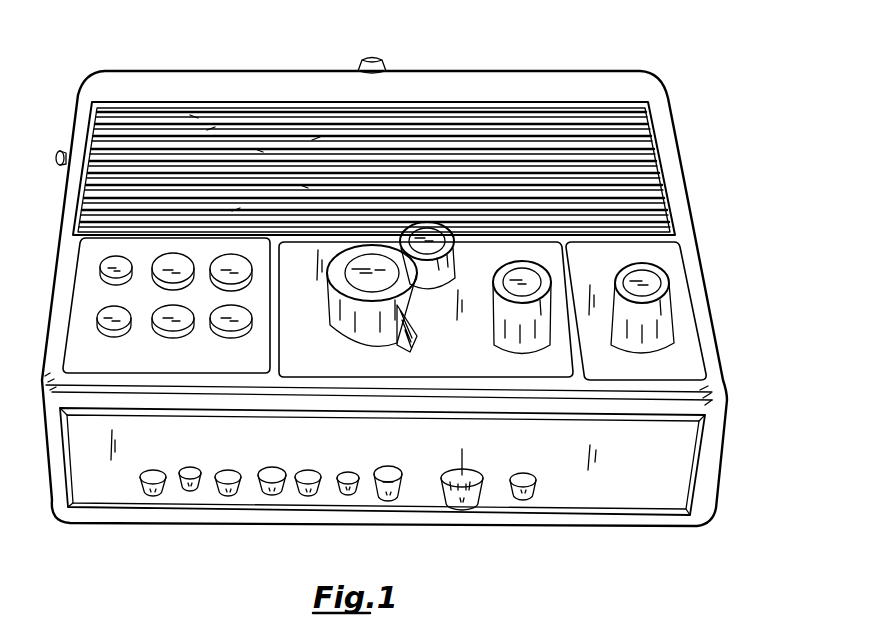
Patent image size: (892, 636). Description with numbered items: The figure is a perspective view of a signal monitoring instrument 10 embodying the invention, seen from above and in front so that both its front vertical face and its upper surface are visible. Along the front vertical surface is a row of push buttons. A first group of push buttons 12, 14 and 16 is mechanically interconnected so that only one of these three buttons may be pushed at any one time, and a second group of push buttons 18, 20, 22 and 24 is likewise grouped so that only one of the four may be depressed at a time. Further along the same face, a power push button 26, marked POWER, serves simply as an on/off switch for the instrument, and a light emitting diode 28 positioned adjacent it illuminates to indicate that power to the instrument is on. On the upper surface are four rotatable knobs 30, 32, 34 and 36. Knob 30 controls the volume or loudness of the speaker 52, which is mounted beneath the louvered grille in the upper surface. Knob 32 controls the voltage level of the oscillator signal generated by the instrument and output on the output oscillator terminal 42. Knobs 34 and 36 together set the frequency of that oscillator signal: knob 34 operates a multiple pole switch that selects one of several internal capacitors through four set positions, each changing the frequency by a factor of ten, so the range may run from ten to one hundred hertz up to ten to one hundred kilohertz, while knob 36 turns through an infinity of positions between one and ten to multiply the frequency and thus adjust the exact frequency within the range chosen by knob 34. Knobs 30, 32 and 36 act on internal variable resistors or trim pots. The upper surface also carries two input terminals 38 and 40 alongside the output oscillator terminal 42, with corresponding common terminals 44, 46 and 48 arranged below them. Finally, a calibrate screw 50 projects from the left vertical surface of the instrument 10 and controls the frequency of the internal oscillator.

The signal monitoring instrument 10 is at (496, 44).
The push button 12 is at (150, 497).
The push button 14 is at (190, 492).
The push button 16 is at (229, 497).
The push button 18 is at (272, 497).
The push button 20 is at (308, 497).
The push button 22 is at (347, 495).
The push button 24 is at (390, 501).
The power push button 26 is at (462, 510).
The light emitting diode 28 is at (523, 503).
The rotatable knob 30 is at (650, 273).
The rotatable knob 32 is at (541, 270).
The rotatable knob 34 is at (446, 243).
The rotatable knob 36 is at (360, 265).
The input terminal 38 is at (108, 265).
The input terminal 40 is at (176, 266).
The output oscillator terminal 42 is at (222, 268).
The common terminal 44 is at (104, 322).
The common terminal 46 is at (174, 321).
The common terminal 48 is at (229, 321).
The calibrate screw 50 is at (56, 160).
The speaker 52 is at (215, 123).